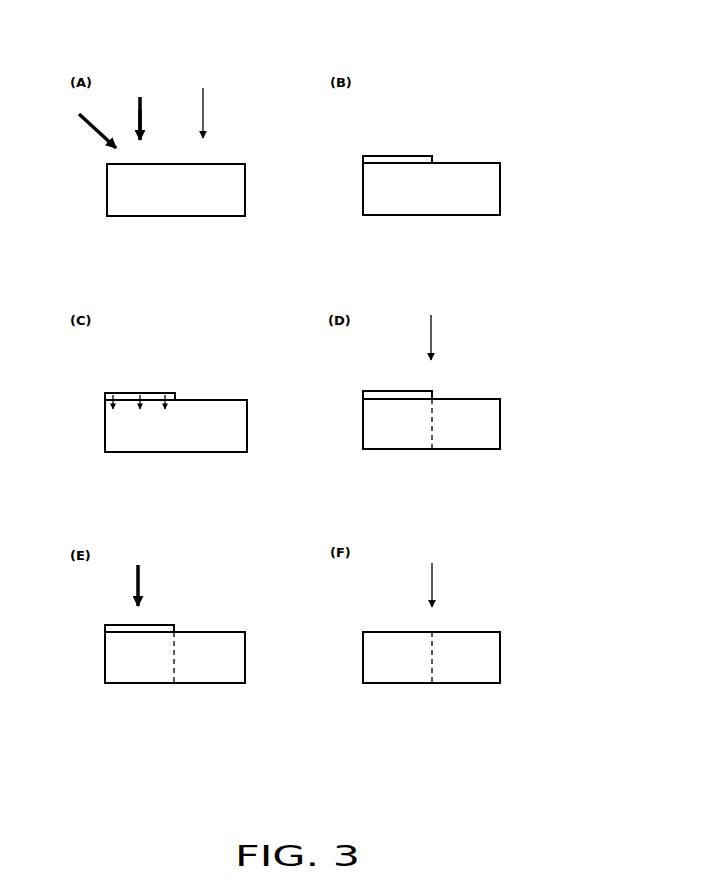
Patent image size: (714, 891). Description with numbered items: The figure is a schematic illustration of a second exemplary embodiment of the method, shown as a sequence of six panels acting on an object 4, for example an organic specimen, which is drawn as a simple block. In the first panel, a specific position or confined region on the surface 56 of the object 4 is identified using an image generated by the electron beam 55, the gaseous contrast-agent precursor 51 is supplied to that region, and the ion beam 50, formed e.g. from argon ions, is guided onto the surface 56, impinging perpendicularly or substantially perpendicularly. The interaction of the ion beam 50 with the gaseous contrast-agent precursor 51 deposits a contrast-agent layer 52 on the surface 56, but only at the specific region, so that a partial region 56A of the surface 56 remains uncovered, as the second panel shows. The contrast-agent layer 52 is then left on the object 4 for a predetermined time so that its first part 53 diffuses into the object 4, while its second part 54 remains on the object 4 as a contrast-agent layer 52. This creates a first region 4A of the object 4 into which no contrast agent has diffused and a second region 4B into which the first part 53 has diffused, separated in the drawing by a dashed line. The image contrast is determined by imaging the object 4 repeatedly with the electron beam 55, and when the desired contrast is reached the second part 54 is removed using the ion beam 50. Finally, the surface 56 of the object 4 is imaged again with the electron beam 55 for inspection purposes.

The object 4 is at (235, 208).
The first region 4A is at (497, 418).
The second region 4B is at (380, 445).
The ion beam 50 is at (137, 103).
The gaseous contrast-agent precursor 51 is at (86, 125).
The contrast-agent layer 52 is at (403, 157).
The first part of the contrast-agent layer 53 is at (107, 408).
The second part of the contrast-agent layer 54 is at (373, 391).
The electron beam 55 is at (337, 346).
The surface 56 is at (212, 164).
The partial region 56A is at (497, 163).